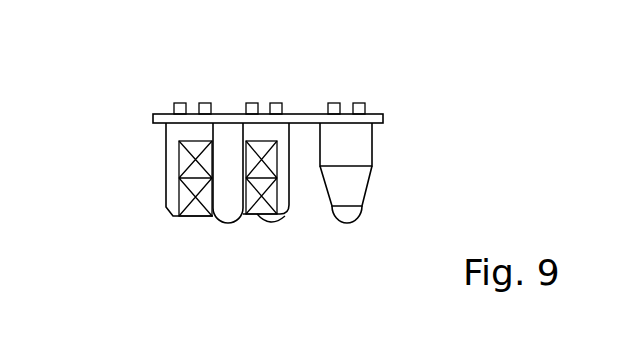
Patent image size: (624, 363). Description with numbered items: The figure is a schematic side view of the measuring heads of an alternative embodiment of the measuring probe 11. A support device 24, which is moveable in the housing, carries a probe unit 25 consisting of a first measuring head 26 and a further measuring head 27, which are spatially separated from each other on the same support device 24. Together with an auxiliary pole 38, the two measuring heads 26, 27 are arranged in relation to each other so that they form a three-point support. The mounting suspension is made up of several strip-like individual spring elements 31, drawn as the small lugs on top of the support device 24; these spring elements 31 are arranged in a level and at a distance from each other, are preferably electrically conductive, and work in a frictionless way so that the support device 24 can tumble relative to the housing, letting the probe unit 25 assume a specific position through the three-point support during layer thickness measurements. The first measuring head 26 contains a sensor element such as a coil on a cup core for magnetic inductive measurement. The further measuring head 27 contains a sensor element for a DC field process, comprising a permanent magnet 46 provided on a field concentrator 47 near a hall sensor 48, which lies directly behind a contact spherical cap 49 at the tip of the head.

The measuring probe 11 is at (122, 141).
The support device 24 is at (306, 115).
The probe unit 25 is at (358, 62).
The first measuring head 26 is at (140, 216).
The further measuring head 27 is at (395, 124).
The spring elements 31 is at (205, 103).
The auxiliary pole 38 is at (278, 222).
The permanent magnet 46 is at (392, 139).
The field concentrator 47 is at (392, 179).
The hall sensor 48 is at (378, 207).
The contact spherical cap 49 is at (227, 213).